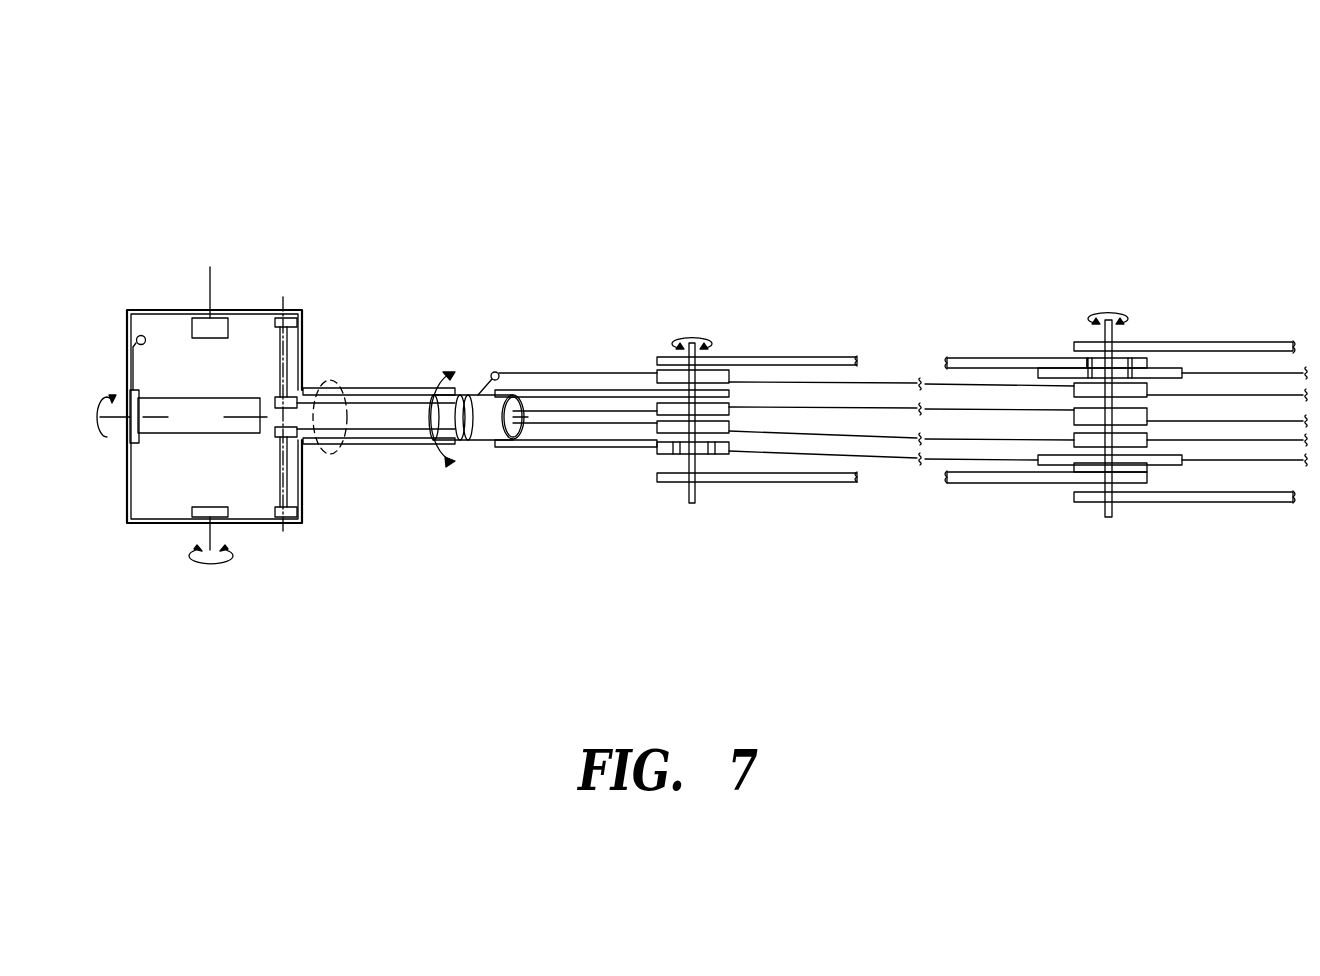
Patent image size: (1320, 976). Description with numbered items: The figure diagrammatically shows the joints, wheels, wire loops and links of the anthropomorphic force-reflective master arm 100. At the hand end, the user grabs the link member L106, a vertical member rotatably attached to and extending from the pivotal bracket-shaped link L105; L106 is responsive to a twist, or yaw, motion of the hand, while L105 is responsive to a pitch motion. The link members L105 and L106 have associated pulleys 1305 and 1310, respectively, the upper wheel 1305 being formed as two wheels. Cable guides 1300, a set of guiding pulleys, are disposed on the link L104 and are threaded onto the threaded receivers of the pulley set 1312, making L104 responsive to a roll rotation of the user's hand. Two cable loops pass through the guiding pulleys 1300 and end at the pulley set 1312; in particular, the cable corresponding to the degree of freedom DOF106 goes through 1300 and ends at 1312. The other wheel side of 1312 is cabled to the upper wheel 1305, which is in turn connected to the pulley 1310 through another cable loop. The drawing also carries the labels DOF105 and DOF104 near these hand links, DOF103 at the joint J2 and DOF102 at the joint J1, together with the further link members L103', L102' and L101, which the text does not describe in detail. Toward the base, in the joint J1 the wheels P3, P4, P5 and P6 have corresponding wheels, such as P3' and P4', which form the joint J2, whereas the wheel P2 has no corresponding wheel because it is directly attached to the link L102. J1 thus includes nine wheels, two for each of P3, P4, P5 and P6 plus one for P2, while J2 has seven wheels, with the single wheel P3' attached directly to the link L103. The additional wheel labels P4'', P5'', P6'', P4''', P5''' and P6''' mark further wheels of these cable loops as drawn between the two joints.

The robotic manipulator system 100 is at (1063, 93).
The pivotal bracket-shaped link L105 is at (140, 303).
The pulley 1310 is at (132, 390).
The upper wheel 1305 is at (210, 338).
The pulley set 1312 is at (298, 345).
The link member L106 is at (222, 428).
The degree of freedom DOF106 is at (78, 436).
The degree of freedom 105 (rotation) DOF105 is at (203, 575).
The link L104 is at (376, 399).
The cable guides 1300 is at (338, 454).
The degree of freedom 104 (roll) DOF104 is at (443, 438).
The link L103 is at (543, 385).
The link L103' shaft L103' is at (608, 434).
The joint J2 is at (687, 444).
The degree of freedom 103 (rotation) DOF103 is at (701, 321).
The link L102 is at (872, 349).
The link L102' is at (902, 495).
The pulley P4''' is at (658, 354).
The pulley P6''' is at (646, 356).
The pulley P5''' is at (659, 462).
The wheel P3' is at (902, 507).
The pulley P4'' is at (901, 345).
The pulley P6'' is at (901, 374).
The pulley P5'' is at (901, 437).
The joint J1 is at (1107, 448).
The degree of freedom 102 (rotation) DOF102 is at (1107, 292).
The link L101 is at (1187, 426).
The wheel P2 is at (1183, 370).
The wheel P4 is at (1190, 340).
The wheel P4' is at (1030, 335).
The wheel P6 is at (1190, 411).
The wheel P5 is at (1172, 463).
The wheel P3 is at (1173, 509).